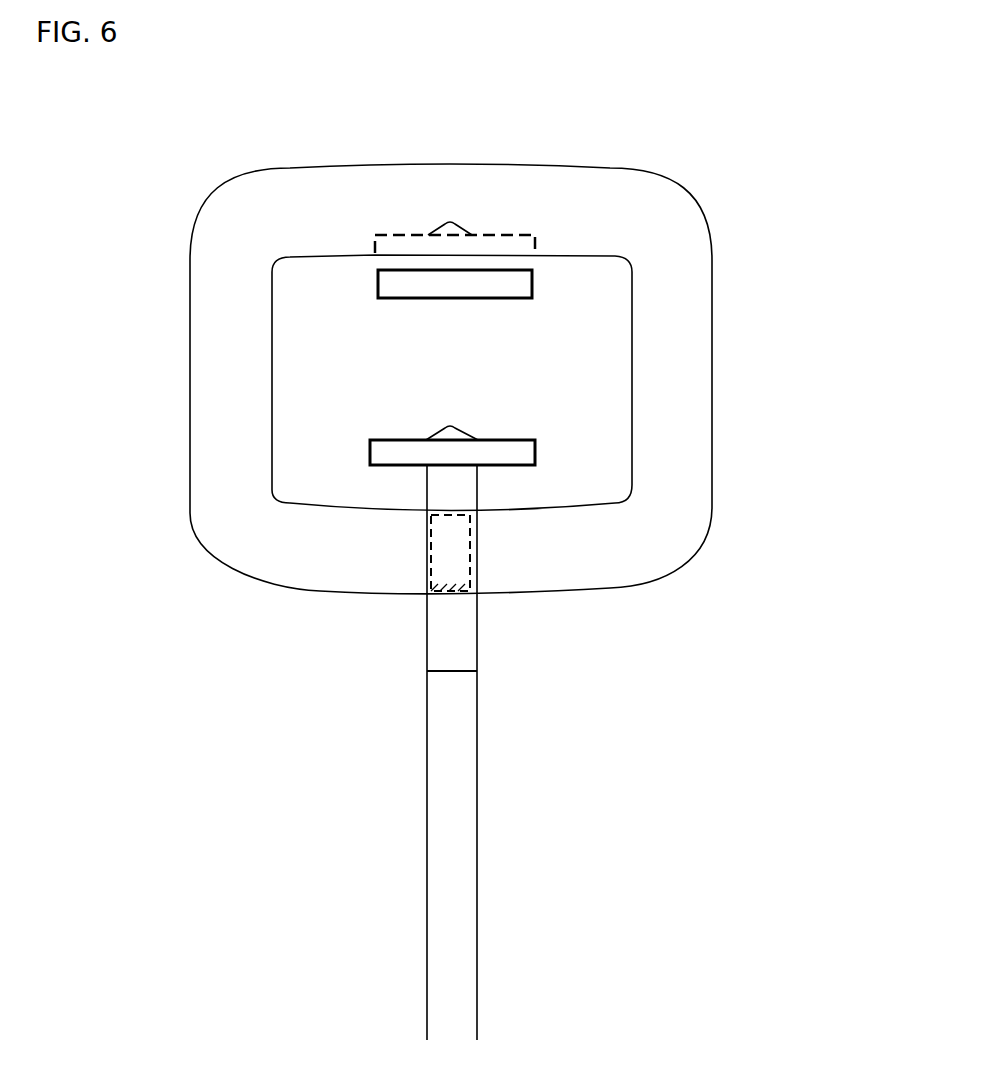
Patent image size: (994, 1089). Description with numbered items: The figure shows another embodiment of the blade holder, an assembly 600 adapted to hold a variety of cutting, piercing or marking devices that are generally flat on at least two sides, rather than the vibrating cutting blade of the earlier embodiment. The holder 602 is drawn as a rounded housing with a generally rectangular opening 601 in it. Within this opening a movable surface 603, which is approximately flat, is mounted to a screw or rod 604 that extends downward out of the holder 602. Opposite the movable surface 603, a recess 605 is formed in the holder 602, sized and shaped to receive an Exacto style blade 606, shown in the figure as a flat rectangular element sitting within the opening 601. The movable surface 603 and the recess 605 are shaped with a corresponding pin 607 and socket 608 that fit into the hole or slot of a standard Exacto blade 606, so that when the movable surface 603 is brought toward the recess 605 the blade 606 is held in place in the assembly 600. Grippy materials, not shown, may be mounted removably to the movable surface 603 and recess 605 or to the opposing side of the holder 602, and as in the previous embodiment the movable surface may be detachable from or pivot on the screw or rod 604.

The assembly 600 is at (625, 168).
The opening 601 is at (578, 373).
The holder 602 is at (663, 283).
The movable surface 603 is at (543, 455).
The screw or rod 604 is at (470, 814).
The recess 605 is at (393, 237).
The Exacto style blade 606 is at (428, 302).
The pin 607 is at (453, 423).
The socket 608 is at (448, 220).